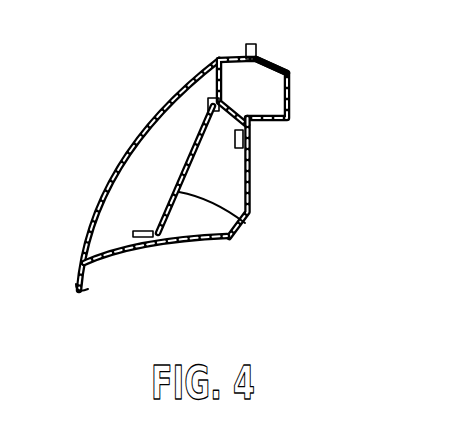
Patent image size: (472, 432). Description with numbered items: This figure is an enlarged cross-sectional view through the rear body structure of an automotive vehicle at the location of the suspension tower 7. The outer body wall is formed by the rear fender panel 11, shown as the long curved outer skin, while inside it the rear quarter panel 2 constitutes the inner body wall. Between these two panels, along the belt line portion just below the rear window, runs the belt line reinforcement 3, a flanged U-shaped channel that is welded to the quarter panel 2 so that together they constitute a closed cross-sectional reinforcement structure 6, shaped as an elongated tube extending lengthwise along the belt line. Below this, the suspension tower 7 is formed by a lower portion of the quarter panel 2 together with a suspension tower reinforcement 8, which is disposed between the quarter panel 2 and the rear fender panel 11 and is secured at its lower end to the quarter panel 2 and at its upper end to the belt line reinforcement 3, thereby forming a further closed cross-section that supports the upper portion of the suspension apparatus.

The rear quarter panel 2 is at (252, 187).
The belt line reinforcement 3 is at (215, 65).
The closed cross-sectional reinforcement structure 6 is at (275, 41).
The suspension tower 7 is at (205, 243).
The suspension tower reinforcement 8 is at (246, 222).
The rear fender panel 11 is at (129, 147).